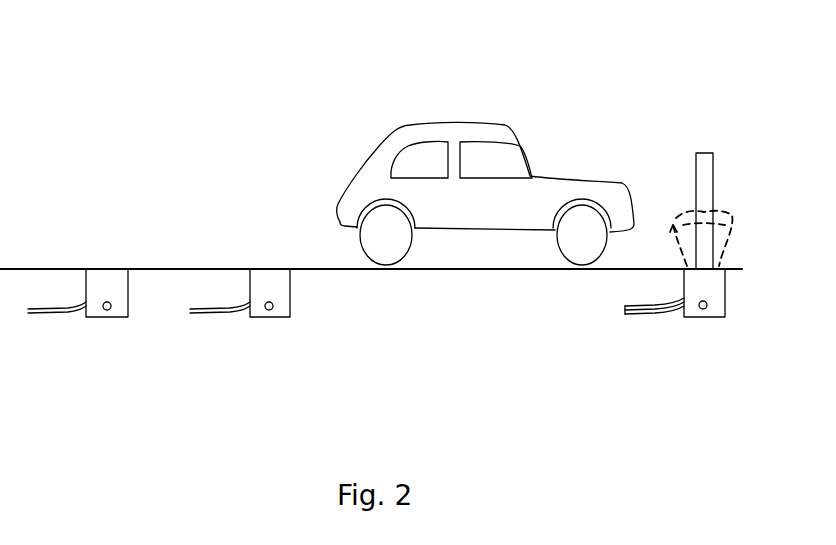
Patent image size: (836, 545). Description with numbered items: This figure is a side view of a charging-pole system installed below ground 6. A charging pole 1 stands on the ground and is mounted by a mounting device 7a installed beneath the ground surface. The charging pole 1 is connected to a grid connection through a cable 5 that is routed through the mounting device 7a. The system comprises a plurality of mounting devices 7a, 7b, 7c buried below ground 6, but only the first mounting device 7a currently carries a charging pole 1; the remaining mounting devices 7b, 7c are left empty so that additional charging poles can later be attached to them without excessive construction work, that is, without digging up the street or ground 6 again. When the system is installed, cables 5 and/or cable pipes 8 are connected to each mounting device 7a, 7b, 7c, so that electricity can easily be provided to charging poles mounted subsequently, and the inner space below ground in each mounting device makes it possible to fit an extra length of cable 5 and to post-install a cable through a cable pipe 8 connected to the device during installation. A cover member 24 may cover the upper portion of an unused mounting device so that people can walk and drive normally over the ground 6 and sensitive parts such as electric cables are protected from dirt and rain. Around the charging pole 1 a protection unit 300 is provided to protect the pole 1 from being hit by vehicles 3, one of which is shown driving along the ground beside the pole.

The charging pole 1 is at (695, 165).
The vehicle 3 is at (417, 135).
The cable 5 is at (628, 315).
The ground 6 is at (25, 267).
The cable pipe 8 is at (655, 315).
The cover member 24 is at (108, 267).
The mounting device 7a is at (705, 330).
The mounting device 7b is at (264, 330).
The mounting device 7c is at (122, 330).
The protection unit 300 is at (734, 215).